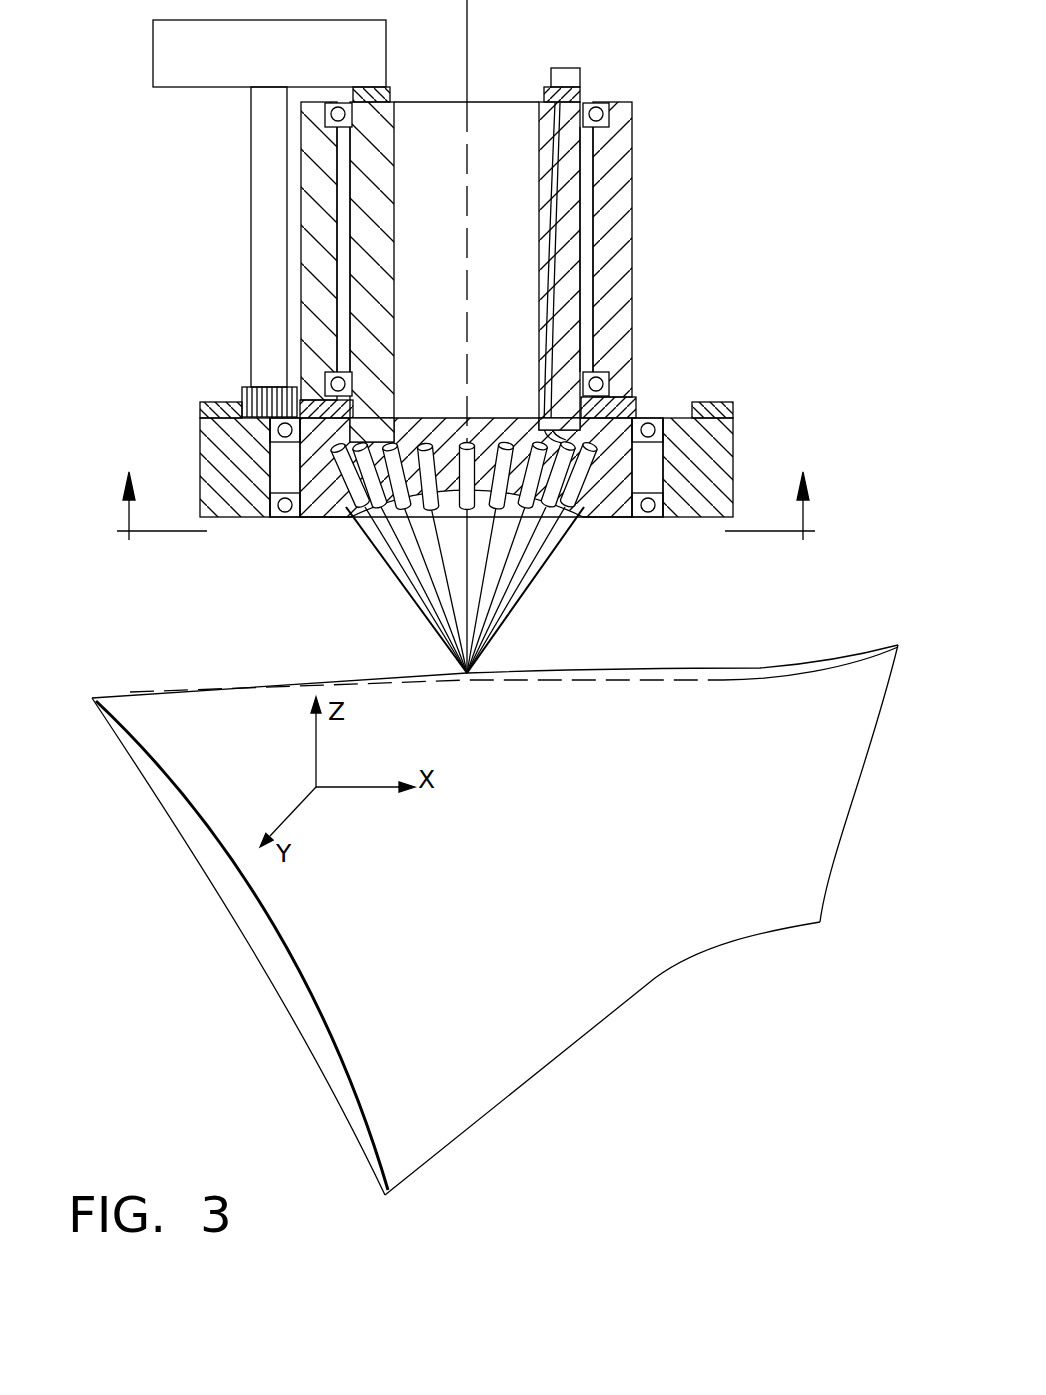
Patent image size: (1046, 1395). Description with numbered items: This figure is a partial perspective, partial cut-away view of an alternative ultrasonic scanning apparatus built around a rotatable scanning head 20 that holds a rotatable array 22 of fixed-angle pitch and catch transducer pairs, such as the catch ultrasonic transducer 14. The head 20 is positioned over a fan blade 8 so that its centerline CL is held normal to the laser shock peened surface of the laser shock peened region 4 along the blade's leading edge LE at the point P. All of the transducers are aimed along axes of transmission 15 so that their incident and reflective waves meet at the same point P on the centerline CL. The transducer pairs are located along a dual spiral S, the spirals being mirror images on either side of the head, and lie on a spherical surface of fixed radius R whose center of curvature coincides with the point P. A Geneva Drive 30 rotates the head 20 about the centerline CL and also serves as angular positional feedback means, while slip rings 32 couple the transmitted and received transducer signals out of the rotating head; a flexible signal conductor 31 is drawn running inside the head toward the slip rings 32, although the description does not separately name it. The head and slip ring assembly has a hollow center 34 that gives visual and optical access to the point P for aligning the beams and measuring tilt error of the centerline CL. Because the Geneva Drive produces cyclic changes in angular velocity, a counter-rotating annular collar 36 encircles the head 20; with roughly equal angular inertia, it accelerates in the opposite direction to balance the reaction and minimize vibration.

The fan blade 8 is at (480, 856).
The catch ultrasonic transducer 14 is at (466, 444).
The axes of transmission 15 is at (546, 597).
The rotatable scanning head 20 is at (680, 276).
The rotatable array 22 is at (500, 435).
The Geneva Drive 30 is at (240, 240).
The flexible signal cable 31 is at (535, 218).
The slip rings 32 is at (606, 73).
The hollow center 34 is at (442, 204).
The counter-rotating annular collar 36 is at (200, 432).
The laser shock peened region 4 is at (466, 529).
The centerline CL is at (469, 40).
The dual spiral S is at (536, 522).
The fixed radius R is at (408, 578).
The point P is at (480, 672).
The leading edge LE is at (185, 688).